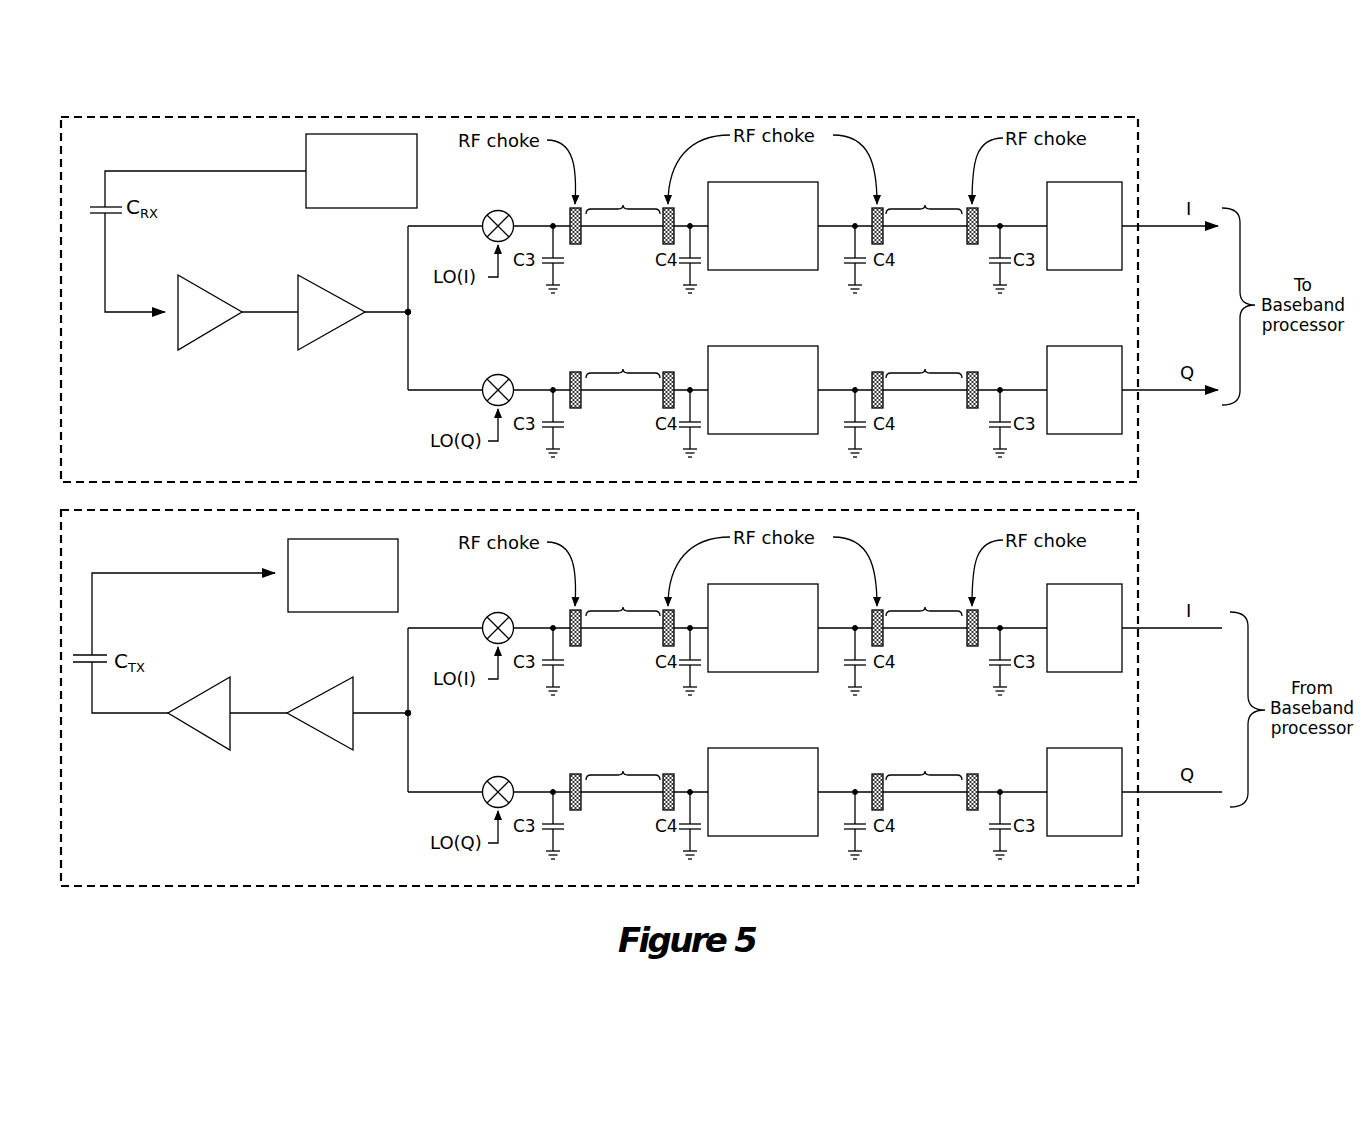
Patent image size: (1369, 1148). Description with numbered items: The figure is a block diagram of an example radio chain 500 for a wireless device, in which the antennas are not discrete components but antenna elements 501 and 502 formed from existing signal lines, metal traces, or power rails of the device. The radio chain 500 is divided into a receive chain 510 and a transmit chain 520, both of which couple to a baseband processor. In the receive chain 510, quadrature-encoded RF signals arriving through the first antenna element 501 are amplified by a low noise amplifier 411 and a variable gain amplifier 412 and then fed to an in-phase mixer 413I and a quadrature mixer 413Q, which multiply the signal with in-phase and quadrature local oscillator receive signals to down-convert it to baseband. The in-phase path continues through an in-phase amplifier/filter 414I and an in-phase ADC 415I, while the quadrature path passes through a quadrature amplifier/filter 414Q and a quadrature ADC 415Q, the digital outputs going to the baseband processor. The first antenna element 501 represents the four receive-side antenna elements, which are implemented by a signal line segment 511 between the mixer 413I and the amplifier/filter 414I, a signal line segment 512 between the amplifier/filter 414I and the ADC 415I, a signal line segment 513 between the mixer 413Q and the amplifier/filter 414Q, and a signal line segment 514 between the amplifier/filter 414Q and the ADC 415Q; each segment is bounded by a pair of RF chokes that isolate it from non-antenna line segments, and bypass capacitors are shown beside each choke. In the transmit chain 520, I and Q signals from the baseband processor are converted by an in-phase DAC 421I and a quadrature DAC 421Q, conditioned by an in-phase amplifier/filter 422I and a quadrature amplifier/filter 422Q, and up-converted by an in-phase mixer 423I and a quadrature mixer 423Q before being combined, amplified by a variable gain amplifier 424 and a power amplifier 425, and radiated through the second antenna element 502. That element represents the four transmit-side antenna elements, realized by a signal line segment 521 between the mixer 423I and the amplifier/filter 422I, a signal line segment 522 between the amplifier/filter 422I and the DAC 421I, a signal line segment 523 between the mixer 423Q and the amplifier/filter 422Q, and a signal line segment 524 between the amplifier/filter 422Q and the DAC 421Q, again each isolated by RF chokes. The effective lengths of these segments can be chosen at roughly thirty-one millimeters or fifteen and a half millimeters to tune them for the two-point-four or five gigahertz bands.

The radio chain 500 is at (105, 81).
The receive chain 510 is at (310, 442).
The transmit chain 520 is at (307, 856).
The first antenna element 501 is at (346, 199).
The second antenna element 502 is at (328, 604).
The low noise amplifier 411 is at (213, 288).
The variable gain amplifier 412 is at (332, 288).
The in-phase mixer 413I is at (505, 203).
The quadrature mixer 413Q is at (508, 367).
The in-phase amplifier/filter 414I is at (763, 226).
The quadrature amplifier/filter 414Q is at (763, 390).
The in-phase analog-to-digital converter 415I is at (1084, 226).
The quadrature analog-to-digital converter 415Q is at (1084, 390).
The signal line segment 511 is at (622, 233).
The signal line segment 512 is at (925, 233).
The signal line segment 513 is at (622, 397).
The signal line segment 514 is at (925, 397).
The power amplifier 425 is at (214, 685).
The variable gain amplifier 424 is at (332, 689).
The in-phase mixer 423I is at (505, 605).
The quadrature mixer 423Q is at (508, 769).
The in-phase amplifier/filter 422I is at (763, 628).
The quadrature amplifier/filter 422Q is at (763, 792).
The in-phase digital-to-analog converter 421I is at (1084, 628).
The quadrature digital-to-analog converter 421Q is at (1084, 792).
The signal line segment 521 is at (622, 635).
The signal line segment 522 is at (925, 635).
The signal line segment 523 is at (622, 799).
The signal line segment 524 is at (925, 799).